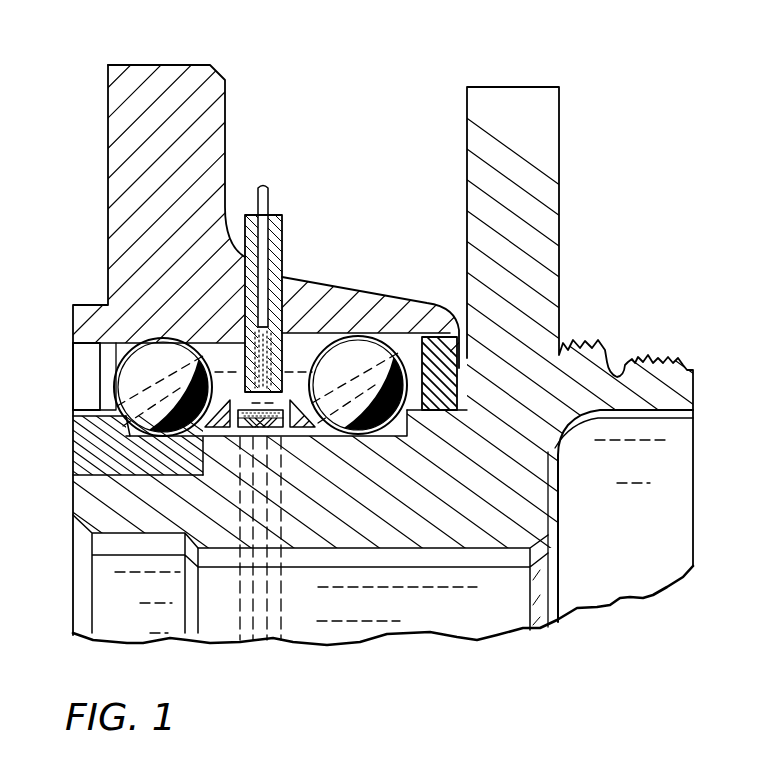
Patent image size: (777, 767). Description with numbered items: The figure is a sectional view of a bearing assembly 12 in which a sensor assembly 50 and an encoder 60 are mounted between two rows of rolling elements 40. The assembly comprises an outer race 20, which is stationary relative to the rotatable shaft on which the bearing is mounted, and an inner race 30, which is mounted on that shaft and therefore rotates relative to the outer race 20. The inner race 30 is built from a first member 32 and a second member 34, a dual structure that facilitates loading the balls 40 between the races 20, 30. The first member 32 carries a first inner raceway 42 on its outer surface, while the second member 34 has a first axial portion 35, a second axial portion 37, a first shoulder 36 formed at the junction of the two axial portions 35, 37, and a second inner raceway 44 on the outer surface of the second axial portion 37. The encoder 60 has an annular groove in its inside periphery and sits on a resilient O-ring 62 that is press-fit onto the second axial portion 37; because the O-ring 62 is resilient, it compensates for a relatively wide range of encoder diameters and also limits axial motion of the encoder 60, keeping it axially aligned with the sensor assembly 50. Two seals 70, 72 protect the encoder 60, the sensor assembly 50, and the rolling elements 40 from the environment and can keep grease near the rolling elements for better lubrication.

The bearing assembly 12 is at (355, 73).
The outer race 20 is at (178, 72).
The inner race 30 is at (474, 555).
The first member 32 is at (88, 443).
The second member 34 is at (92, 506).
The first axial portion 35 is at (95, 476).
The first shoulder 36 is at (200, 470).
The second axial portion 37 is at (203, 445).
The rolling elements 40 is at (160, 387).
The first inner raceway 42 is at (134, 424).
The second inner raceway 44 is at (384, 420).
The sensor assembly 50 is at (283, 230).
The encoder 60 is at (285, 429).
The O-ring 62 is at (252, 438).
The seal 70 is at (82, 353).
The seal 72 is at (458, 345).